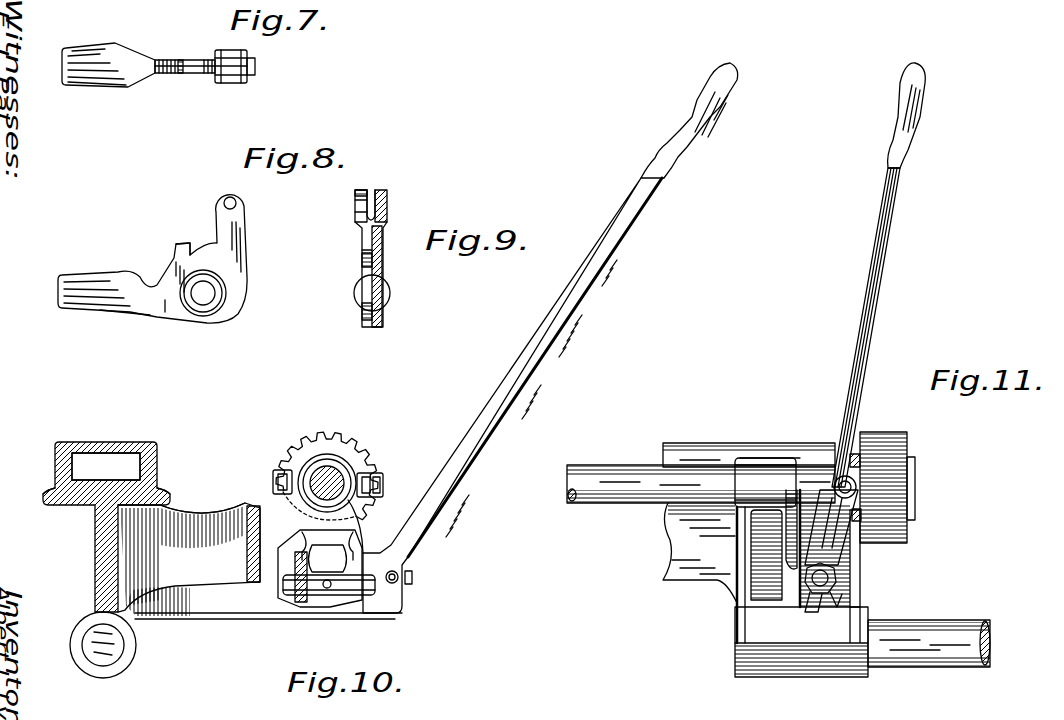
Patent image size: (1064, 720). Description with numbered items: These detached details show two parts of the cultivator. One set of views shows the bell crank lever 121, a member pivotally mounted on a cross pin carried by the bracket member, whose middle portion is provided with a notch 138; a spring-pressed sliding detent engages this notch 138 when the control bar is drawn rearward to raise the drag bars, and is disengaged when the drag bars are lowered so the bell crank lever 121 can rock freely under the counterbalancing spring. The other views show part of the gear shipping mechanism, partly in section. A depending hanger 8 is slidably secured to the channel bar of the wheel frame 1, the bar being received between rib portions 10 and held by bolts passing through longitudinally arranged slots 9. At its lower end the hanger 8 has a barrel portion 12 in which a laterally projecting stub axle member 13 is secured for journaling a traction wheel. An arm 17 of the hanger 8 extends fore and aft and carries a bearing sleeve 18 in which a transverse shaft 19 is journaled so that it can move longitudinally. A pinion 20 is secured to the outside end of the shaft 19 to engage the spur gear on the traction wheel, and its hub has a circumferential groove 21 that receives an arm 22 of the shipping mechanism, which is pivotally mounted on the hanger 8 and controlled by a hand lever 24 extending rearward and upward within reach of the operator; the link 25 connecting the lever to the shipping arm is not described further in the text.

In FIG. 10, the wheel frame 1 is at (158, 464).
In FIG. 11, the wheel frame 1 is at (663, 457).
In FIG. 10, the depending hangers 8 is at (95, 538).
In FIG. 11, the depending hangers 8 is at (665, 548).
In FIG. 10, the longitudinally arranged slots 9 is at (105, 452).
In FIG. 10, the rib portions 10 is at (168, 491).
In FIG. 10, the barrel portions 12 is at (137, 652).
In FIG. 11, the barrel portions 12 is at (735, 655).
In FIG. 10, the stub axle members 13 is at (92, 651).
In FIG. 11, the stub axle members 13 is at (934, 619).
In FIG. 10, the arms 17 is at (240, 506).
In FIG. 11, the arms 17 is at (738, 562).
In FIG. 10, the bearing sleeves 18 is at (352, 470).
In FIG. 11, the bearing sleeves 18 is at (757, 458).
In FIG. 10, the transverse shafts 19 is at (310, 476).
In FIG. 11, the transverse shafts 19 is at (617, 505).
In FIG. 10, the pinions 20 is at (352, 441).
In FIG. 11, the pinions 20 is at (905, 442).
In FIG. 11, the circumferential grooves 21 is at (863, 463).
In FIG. 10, the arms of shipping mechanism 22 is at (273, 478).
In FIG. 11, the arms of shipping mechanism 22 is at (858, 453).
In FIG. 10, the hand levers 24 is at (572, 309).
In FIG. 11, the hand levers 24 is at (875, 327).
In FIG. 10, the pawl link 25 is at (368, 506).
In FIG. 11, the pawl link 25 is at (860, 546).
In FIG. 7, the bell crank lever 121 is at (187, 75).
In FIG. 8, the bell crank lever 121 is at (238, 300).
In FIG. 9, the bell crank lever 121 is at (356, 246).
In FIG. 7, the notch 138 is at (181, 59).
In FIG. 8, the notch 138 is at (181, 247).